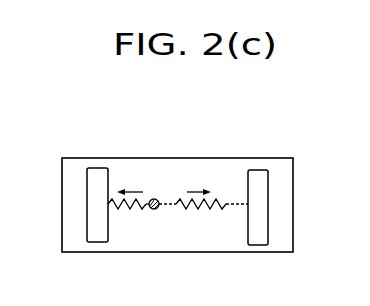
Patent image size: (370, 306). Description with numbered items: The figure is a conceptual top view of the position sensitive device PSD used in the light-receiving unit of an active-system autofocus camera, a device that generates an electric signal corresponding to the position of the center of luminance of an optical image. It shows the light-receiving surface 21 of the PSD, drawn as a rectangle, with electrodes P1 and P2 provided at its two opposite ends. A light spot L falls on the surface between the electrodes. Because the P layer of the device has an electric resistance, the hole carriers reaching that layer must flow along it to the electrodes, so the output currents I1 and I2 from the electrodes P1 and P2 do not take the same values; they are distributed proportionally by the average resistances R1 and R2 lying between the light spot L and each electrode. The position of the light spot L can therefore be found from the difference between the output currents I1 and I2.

The light-receiving surface 21 is at (194, 147).
The electrode P1 is at (99, 181).
The electrode P2 is at (259, 185).
The light spot L is at (155, 187).
The average resistance R1 is at (128, 217).
The average resistance R2 is at (203, 216).
The output current I1 is at (130, 184).
The output current I2 is at (199, 185).